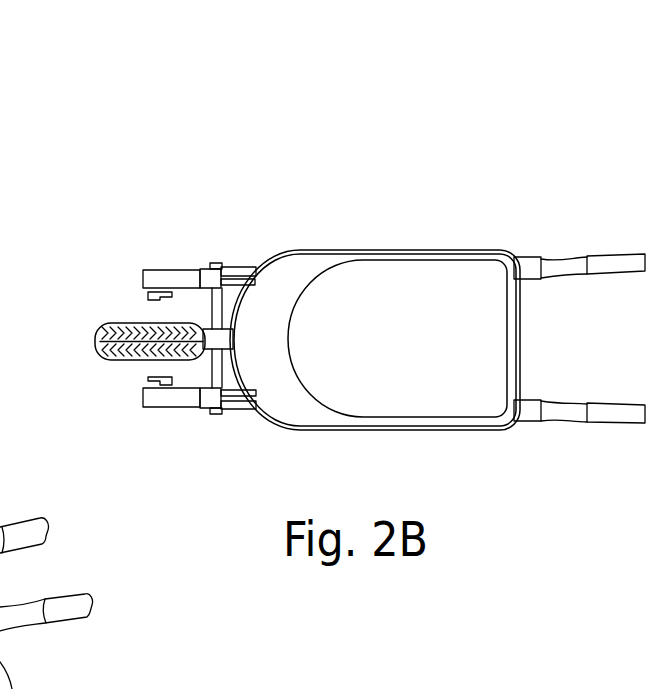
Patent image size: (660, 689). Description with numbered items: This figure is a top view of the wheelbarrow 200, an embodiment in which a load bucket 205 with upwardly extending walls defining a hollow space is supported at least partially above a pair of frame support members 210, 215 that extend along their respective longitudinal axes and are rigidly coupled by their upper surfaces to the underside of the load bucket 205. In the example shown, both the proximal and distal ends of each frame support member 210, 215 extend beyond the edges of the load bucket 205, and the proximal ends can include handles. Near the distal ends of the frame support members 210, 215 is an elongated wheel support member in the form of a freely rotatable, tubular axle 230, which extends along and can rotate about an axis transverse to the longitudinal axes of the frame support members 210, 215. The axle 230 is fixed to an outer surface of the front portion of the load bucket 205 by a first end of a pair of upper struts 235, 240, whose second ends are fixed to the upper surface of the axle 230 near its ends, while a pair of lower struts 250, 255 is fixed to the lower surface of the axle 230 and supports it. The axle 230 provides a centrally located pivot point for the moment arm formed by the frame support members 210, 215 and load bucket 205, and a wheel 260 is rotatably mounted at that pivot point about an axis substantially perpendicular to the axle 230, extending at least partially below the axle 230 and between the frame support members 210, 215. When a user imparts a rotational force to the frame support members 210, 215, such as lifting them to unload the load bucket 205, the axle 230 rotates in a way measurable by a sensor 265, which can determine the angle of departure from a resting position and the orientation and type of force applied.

The wheelbarrow 200 is at (467, 118).
The load bucket 205 is at (421, 358).
The frame support member 210 is at (570, 425).
The frame support member 215 is at (517, 258).
The axle 230 is at (212, 318).
The upper strut 235 is at (233, 267).
The upper strut 240 is at (245, 409).
The lower strut 250 is at (205, 409).
The lower strut 255 is at (207, 269).
The wheel 260 is at (97, 340).
The sensor 265 is at (145, 296).